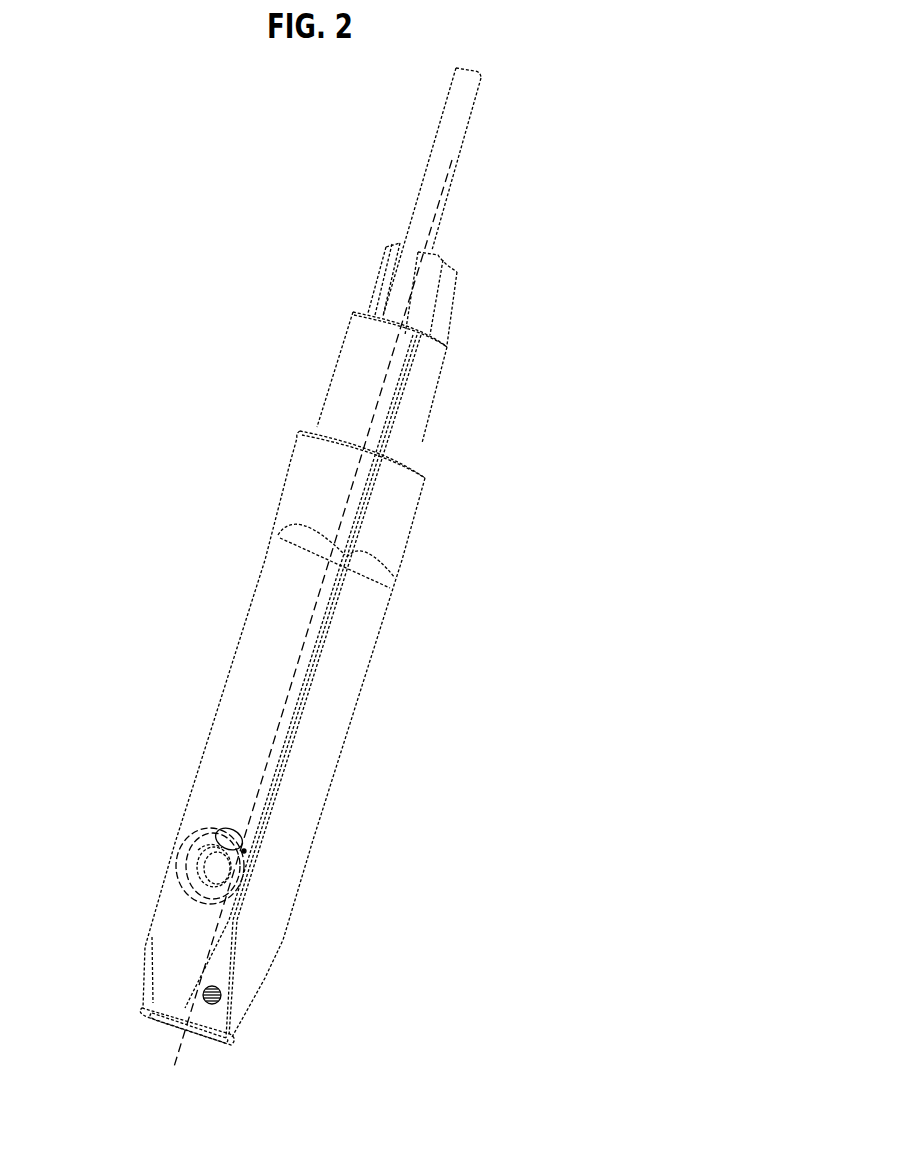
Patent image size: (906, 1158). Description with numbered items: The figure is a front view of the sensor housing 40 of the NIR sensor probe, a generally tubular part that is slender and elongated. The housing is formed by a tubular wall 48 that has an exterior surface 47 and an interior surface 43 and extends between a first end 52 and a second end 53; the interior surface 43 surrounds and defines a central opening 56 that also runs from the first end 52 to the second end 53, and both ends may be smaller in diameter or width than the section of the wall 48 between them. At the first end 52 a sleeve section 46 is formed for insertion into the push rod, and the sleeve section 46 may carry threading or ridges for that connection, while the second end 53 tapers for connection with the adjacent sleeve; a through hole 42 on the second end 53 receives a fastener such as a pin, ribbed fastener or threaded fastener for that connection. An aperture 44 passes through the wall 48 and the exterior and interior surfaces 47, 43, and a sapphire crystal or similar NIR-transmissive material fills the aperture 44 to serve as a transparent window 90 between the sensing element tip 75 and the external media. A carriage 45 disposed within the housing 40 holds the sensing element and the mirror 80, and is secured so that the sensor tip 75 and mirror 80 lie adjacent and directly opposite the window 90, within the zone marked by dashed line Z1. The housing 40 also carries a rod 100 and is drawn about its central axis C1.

The sensor housing 40 is at (380, 711).
The through hole 42 is at (217, 996).
The interior surface 43 is at (173, 1023).
The aperture 44 is at (193, 838).
The carriage 45 is at (380, 272).
The sleeve section 46 is at (420, 397).
The exterior surface 47 is at (175, 988).
The tubular wall 48 is at (167, 932).
The first end 52 is at (355, 316).
The second end 53 is at (235, 1045).
The central opening 56 is at (198, 1046).
The sensing element tip 75 is at (227, 830).
The mirror 80 is at (227, 868).
The transparent window 90 is at (182, 853).
The piston rod 100 is at (415, 195).
The central axis C1 is at (321, 631).
The dashed line denoting zone Z1 is at (244, 851).